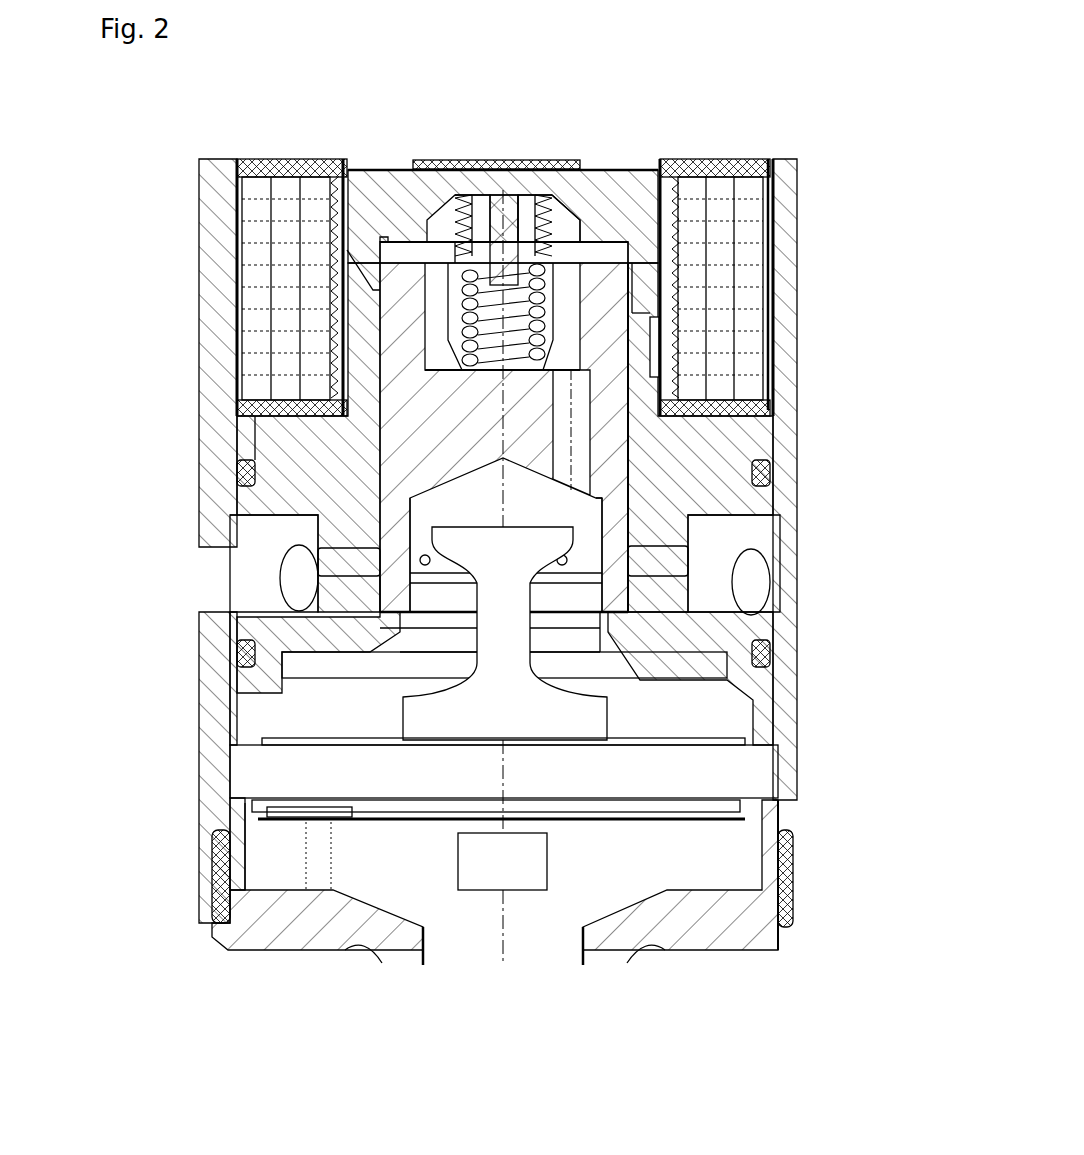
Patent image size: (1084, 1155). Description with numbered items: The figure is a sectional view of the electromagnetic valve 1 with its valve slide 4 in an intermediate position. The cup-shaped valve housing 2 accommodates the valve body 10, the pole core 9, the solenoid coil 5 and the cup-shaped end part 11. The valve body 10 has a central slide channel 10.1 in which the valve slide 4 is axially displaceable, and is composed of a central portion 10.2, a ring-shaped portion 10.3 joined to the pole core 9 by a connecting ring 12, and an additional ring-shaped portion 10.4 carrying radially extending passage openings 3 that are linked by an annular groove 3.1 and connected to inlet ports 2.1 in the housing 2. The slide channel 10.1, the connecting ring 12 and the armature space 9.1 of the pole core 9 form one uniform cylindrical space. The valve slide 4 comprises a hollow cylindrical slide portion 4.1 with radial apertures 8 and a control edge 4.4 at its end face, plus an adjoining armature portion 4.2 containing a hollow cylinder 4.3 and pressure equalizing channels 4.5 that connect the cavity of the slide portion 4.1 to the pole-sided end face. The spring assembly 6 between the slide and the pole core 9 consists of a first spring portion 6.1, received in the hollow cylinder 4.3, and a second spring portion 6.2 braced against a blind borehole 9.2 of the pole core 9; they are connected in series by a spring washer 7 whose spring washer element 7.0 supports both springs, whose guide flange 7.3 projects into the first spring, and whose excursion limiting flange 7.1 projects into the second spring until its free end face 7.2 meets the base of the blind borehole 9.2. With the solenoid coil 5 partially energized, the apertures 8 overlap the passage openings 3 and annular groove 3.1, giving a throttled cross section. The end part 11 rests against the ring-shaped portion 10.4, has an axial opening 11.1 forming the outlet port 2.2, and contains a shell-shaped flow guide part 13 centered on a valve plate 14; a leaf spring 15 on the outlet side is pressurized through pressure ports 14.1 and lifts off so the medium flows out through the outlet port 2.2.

The electromagnetic valve 1 is at (155, 158).
The valve housing 2 is at (790, 178).
The inlet port 2.1 is at (745, 575).
The outlet port 2.2 is at (532, 943).
The passage opening 3 is at (327, 567).
The annular groove 3.1 is at (590, 583).
The valve slide 4 is at (613, 445).
The hollow cylindrical slide portion 4.1 is at (615, 497).
The armature portion 4.2 is at (378, 418).
The hollow cylinder 4.3 is at (555, 333).
The control edge 4.4 is at (590, 592).
The pressure equalizing channel 4.5 is at (592, 460).
The solenoid coil 5 is at (720, 240).
The spring assembly 6 is at (424, 194).
The first spring portion 6.1 is at (560, 356).
The second spring portion 6.2 is at (542, 195).
The spring washer 7 is at (447, 252).
The spring washer element 7.0 is at (553, 243).
The excursion limiting flange 7.1 is at (450, 232).
The free end face 7.2 is at (483, 192).
The guide flange 7.3 is at (450, 254).
The aperture 8 is at (398, 553).
The pole core 9 is at (597, 185).
The armature space 9.1 is at (388, 249).
The blind borehole 9.2 is at (560, 227).
The valve body 10 is at (263, 442).
The slide channel 10.1 is at (262, 514).
The central portion 10.2 is at (728, 490).
The ring-shaped portion 10.3 is at (642, 395).
The additional ring-shaped portion 10.4 is at (252, 656).
The end part 11 is at (760, 682).
The axial opening 11.1 is at (427, 944).
The connecting ring 12 is at (680, 293).
The flow guide part 13 is at (510, 660).
The valve plate 14 is at (745, 782).
The pressure port 14.1 is at (322, 858).
The leaf spring 15 is at (677, 824).